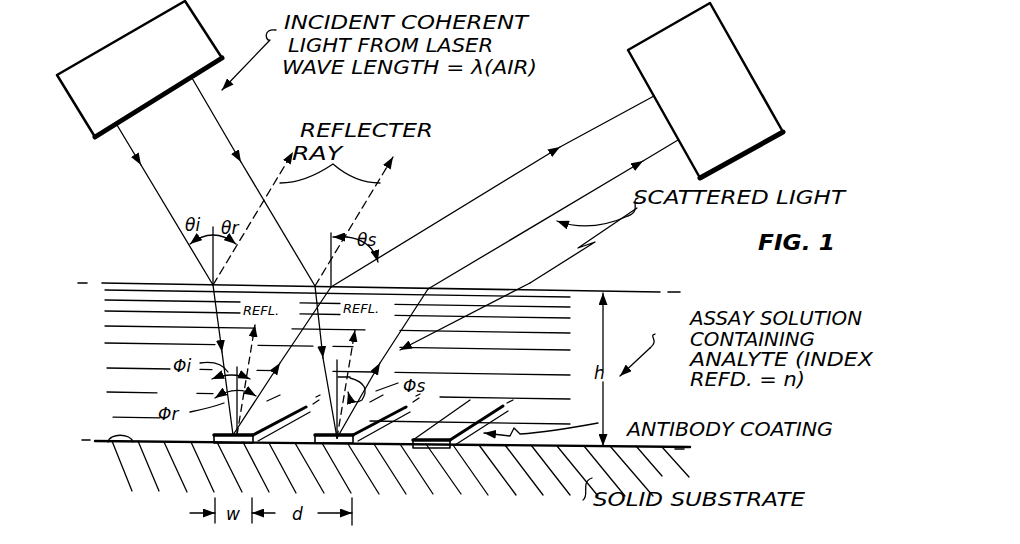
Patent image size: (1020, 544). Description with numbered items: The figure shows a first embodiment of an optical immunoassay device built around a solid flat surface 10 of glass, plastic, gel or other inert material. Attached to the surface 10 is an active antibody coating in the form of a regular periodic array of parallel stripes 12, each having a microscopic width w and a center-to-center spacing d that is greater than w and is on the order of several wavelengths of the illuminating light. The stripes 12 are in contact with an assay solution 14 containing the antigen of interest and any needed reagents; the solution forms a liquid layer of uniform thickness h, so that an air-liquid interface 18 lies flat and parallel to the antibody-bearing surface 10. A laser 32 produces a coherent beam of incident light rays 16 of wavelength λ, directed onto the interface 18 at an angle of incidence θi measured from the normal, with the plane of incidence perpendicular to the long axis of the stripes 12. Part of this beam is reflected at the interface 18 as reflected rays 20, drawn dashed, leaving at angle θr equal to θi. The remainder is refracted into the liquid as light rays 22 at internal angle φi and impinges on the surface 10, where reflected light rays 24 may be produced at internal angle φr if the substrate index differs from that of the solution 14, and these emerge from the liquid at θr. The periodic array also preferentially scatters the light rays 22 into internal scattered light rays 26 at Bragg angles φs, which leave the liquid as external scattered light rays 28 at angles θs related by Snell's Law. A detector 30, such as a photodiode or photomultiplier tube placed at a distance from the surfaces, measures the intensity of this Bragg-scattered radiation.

The solid flat surface 10 is at (112, 443).
The parallel stripes 12 is at (213, 442).
The assay solution 14 is at (598, 338).
The incident light rays 16 is at (145, 172).
The air-liquid interface 18 is at (578, 288).
The reflected rays 20 is at (303, 213).
The refracted light rays 22 is at (312, 297).
The reflected light rays 24 is at (252, 347).
The internal scattered light rays 26 is at (390, 273).
The external scattered light rays 28 is at (527, 171).
The detector 30 is at (742, 63).
The laser 32 is at (113, 42).